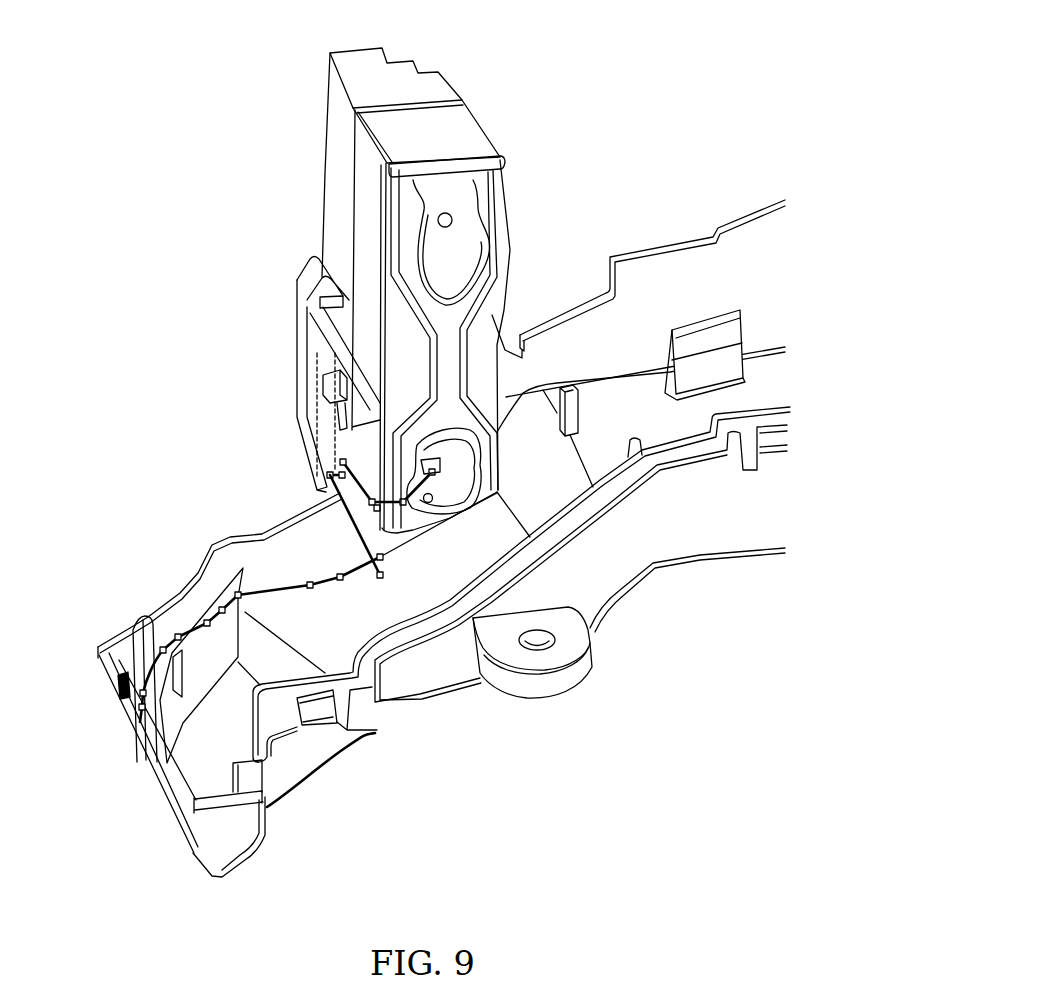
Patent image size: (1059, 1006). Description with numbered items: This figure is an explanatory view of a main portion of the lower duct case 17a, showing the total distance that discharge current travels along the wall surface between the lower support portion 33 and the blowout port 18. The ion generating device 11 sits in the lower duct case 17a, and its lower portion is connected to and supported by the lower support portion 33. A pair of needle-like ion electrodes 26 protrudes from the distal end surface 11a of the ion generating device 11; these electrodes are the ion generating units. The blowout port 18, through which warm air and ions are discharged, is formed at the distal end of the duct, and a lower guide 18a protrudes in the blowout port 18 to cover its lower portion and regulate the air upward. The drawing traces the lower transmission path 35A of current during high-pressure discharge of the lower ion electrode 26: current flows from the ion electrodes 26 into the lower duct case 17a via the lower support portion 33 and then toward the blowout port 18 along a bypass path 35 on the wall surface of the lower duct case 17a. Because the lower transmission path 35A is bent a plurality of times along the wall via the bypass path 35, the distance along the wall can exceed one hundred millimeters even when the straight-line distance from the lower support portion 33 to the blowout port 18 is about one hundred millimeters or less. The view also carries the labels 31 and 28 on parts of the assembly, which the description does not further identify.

The ion generating device 11 is at (337, 132).
The distal end surface 11a is at (408, 355).
The ion electrodes 26 is at (450, 237).
The bracket 31 is at (298, 297).
The lower support portion 33 is at (327, 428).
The bypass path 35 is at (335, 507).
The lower transmission path 35A is at (352, 570).
The wire holding portion 28 is at (163, 724).
The blowout port 18 is at (180, 800).
The lower guide 18a is at (157, 778).
The lower duct case 17a is at (697, 548).